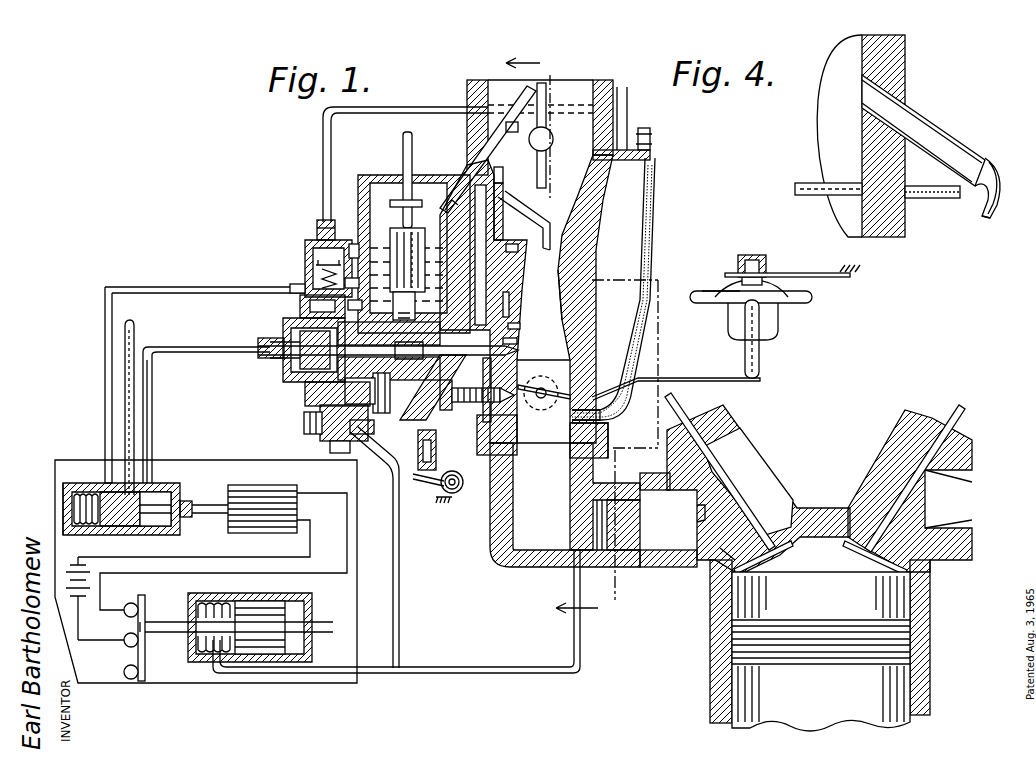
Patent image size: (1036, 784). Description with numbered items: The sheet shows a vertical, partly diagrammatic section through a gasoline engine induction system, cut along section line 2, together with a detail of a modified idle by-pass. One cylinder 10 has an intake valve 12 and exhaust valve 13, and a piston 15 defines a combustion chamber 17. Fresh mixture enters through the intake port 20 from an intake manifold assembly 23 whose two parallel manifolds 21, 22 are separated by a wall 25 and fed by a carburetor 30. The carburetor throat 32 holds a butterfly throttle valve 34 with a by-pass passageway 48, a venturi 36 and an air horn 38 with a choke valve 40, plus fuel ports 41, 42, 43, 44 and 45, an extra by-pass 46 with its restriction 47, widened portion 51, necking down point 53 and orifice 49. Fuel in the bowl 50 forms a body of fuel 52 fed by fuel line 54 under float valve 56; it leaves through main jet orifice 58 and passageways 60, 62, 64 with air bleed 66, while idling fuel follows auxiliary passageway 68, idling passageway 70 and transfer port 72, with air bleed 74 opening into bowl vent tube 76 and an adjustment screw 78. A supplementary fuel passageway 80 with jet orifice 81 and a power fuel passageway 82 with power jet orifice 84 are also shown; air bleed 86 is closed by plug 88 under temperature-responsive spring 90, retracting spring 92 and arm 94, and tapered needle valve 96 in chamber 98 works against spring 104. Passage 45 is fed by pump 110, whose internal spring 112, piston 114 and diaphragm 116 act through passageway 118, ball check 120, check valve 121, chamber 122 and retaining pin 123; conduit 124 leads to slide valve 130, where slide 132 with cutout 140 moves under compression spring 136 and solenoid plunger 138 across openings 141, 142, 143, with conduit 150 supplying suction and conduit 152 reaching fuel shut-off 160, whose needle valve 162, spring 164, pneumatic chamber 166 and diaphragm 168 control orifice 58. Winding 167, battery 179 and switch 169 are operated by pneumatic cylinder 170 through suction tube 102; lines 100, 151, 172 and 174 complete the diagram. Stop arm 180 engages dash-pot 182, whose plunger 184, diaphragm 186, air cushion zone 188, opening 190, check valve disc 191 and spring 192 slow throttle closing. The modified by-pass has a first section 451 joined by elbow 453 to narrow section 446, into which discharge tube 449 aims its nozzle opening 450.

In FIG. 1, the section line 2- 2 is at (582, 340).
In FIG. 1, the cylinder 10 is at (928, 588).
In FIG. 1, the intake valve 12 is at (786, 550).
In FIG. 1, the exhaust valve 13 is at (872, 552).
In FIG. 1, the piston 15 is at (740, 688).
In FIG. 1, the combustion chamber 17 is at (895, 612).
In FIG. 1, the intake port 20 is at (732, 549).
In FIG. 1, the manifold 21 is at (552, 495).
In FIG. 1, the manifold 22 is at (673, 524).
In FIG. 1, the intake manifold assembly 23 is at (688, 567).
In FIG. 1, the wall 25 is at (704, 518).
In FIG. 1, the carburetor 30 is at (639, 242).
In FIG. 1, the carburetor throat 32 is at (556, 434).
In FIG. 1, the throttle valve 34 is at (544, 379).
In FIG. 1, the venturi 36 is at (549, 292).
In FIG. 1, the air horn 38 is at (572, 80).
In FIG. 1, the choke valve 40 is at (548, 118).
In FIG. 1, the idle port 41 is at (539, 399).
In FIG. 1, the fuel supply passage 42 is at (585, 306).
In FIG. 1, the port 43 is at (512, 133).
In FIG. 1, the port 44 is at (528, 242).
In FIG. 1, the fuel supply passage 45 is at (446, 107).
In FIG. 1, the by-pass 46 is at (628, 418).
In FIG. 1, the restriction 47 is at (610, 440).
In FIG. 1, the by-pass passageway 48 is at (545, 385).
In FIG. 1, the orifice 49 is at (652, 136).
In FIG. 1, the fuel bowl 50 is at (362, 185).
In FIG. 1, the widened portion 51 is at (627, 100).
In FIG. 1, the body of fuel 52 is at (383, 235).
In FIG. 1, the necking down point 53 is at (660, 190).
In FIG. 1, the fuel line 54 is at (412, 160).
In FIG. 1, the float valve 56 is at (417, 203).
In FIG. 1, the main jet orifice 58 is at (418, 335).
In FIG. 1, the passageway 60 is at (445, 337).
In FIG. 1, the passageway 62 is at (510, 305).
In FIG. 1, the passageway 64 is at (536, 225).
In FIG. 1, the air bleed 66 is at (504, 176).
In FIG. 1, the auxiliary passageway 68 is at (512, 252).
In FIG. 1, the idling passageway 70 is at (520, 327).
In FIG. 1, the transfer port 72 is at (517, 342).
In FIG. 1, the air bleed 74 is at (483, 255).
In FIG. 1, the bowl vent tube 76 is at (440, 211).
In FIG. 1, the adjustment screw 78 is at (462, 408).
In FIG. 1, the supplementary fuel passageway 80 is at (480, 140).
In FIG. 1, the jet orifice 81 is at (428, 260).
In FIG. 1, the power fuel passageway 82 is at (433, 387).
In FIG. 1, the power jet orifice 84 is at (390, 418).
In FIG. 1, the air bleed 86 is at (484, 415).
In FIG. 1, the plug 88 is at (420, 474).
In FIG. 1, the temperature-responsive spring 90 is at (456, 493).
In FIG. 1, the retracting spring 92 is at (440, 455).
In FIG. 1, the arm 94 is at (434, 497).
In FIG. 1, the tapered needle valve 96 is at (372, 436).
In FIG. 1, the chamber 98 is at (334, 445).
In FIG. 1, the conduit 100 is at (398, 585).
In FIG. 1, the suction tube 102 is at (486, 664).
In FIG. 1, the spring 104 is at (360, 391).
In FIG. 1, the pump 110 is at (302, 241).
In FIG. 1, the internal spring 112 is at (296, 284).
In FIG. 1, the piston 114 is at (356, 286).
In FIG. 1, the diaphragm 116 is at (328, 267).
In FIG. 1, the passageway 118 is at (354, 246).
In FIG. 1, the ball check 120 is at (352, 244).
In FIG. 1, the check valve 121 is at (317, 230).
In FIG. 1, the chamber 122 is at (358, 307).
In FIG. 1, the retaining pin 123 is at (324, 220).
In FIG. 1, the conduit 124 is at (182, 287).
In FIG. 1, the slide valve 130 is at (182, 484).
In FIG. 1, the slide 132 is at (120, 527).
In FIG. 1, the compression spring 136 is at (63, 498).
In FIG. 1, the solenoid plunger 138 is at (212, 505).
In FIG. 1, the cutout 140 is at (120, 509).
In FIG. 1, the opening 141 is at (106, 475).
In FIG. 1, the opening 142 is at (128, 438).
In FIG. 1, the opening 143 is at (148, 478).
In FIG. 1, the conduit 150 is at (134, 332).
In FIG. 1, the control unit 151 is at (241, 450).
In FIG. 1, the conduit 152 is at (238, 352).
In FIG. 1, the fuel shut-off 160 is at (296, 393).
In FIG. 1, the needle valve 162 is at (412, 318).
In FIG. 1, the spring 164 is at (284, 368).
In FIG. 1, the pneumatic chamber 166 is at (290, 333).
In FIG. 1, the winding 167 is at (256, 530).
In FIG. 1, the diaphragm 168 is at (306, 298).
In FIG. 1, the switch 169 is at (136, 656).
In FIG. 1, the pneumatic cylinder 170 is at (208, 590).
In FIG. 1, the seal 172 is at (172, 528).
In FIG. 1, the spring 174 is at (78, 527).
In FIG. 1, the battery 179 is at (88, 568).
In FIG. 1, the stop arm 180 is at (624, 380).
In FIG. 1, the dash-pot 182 is at (784, 327).
In FIG. 1, the plunger 184 is at (760, 364).
In FIG. 1, the diaphragm 186 is at (798, 303).
In FIG. 1, the air cushion zone 188 is at (724, 290).
In FIG. 1, the opening 190 is at (758, 255).
In FIG. 1, the check valve disc 191 is at (762, 270).
In FIG. 1, the spring 192 is at (790, 282).
In FIG. 4, the narrow section 446 is at (962, 215).
In FIG. 4, the discharge tube 449 is at (958, 200).
In FIG. 4, the nozzle opening 450 is at (990, 158).
In FIG. 4, the first section 451 is at (940, 118).
In FIG. 4, the elbow 453 is at (992, 212).